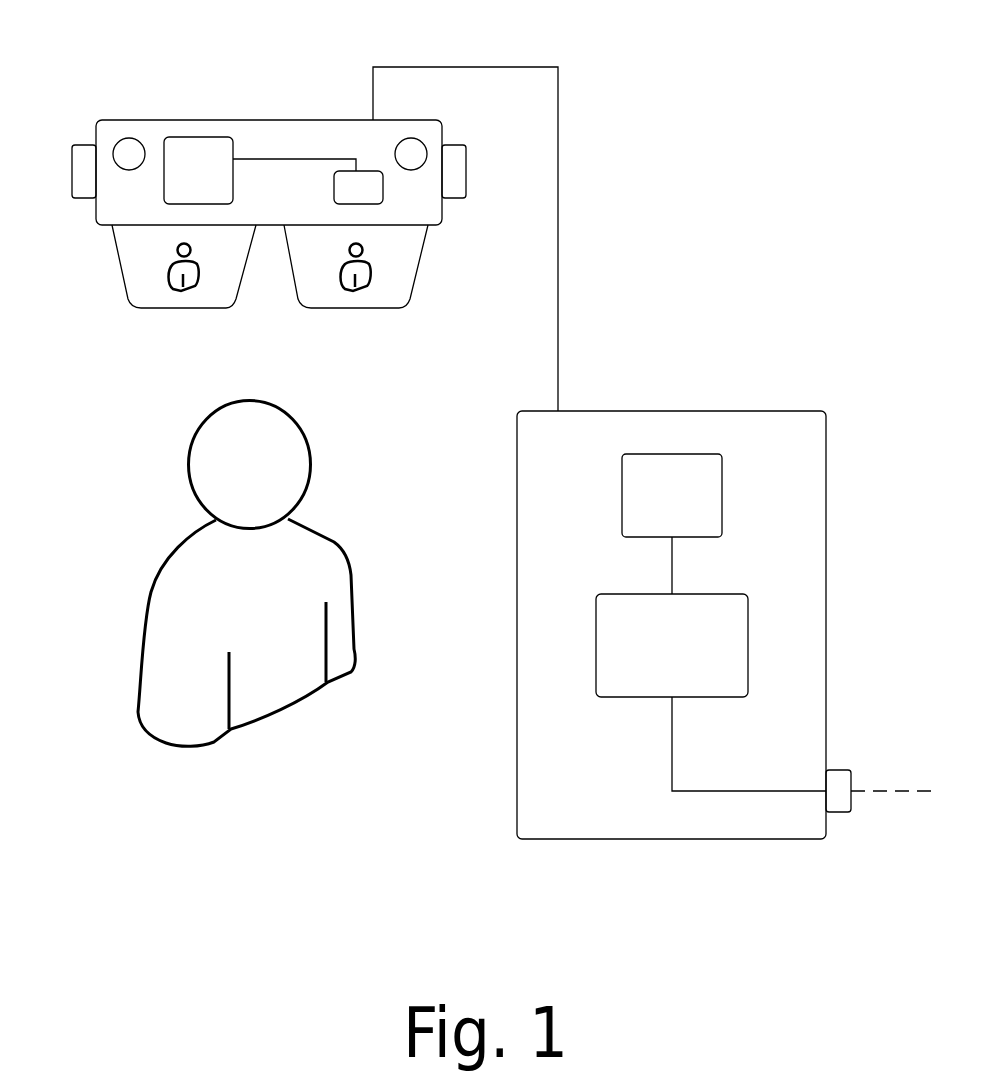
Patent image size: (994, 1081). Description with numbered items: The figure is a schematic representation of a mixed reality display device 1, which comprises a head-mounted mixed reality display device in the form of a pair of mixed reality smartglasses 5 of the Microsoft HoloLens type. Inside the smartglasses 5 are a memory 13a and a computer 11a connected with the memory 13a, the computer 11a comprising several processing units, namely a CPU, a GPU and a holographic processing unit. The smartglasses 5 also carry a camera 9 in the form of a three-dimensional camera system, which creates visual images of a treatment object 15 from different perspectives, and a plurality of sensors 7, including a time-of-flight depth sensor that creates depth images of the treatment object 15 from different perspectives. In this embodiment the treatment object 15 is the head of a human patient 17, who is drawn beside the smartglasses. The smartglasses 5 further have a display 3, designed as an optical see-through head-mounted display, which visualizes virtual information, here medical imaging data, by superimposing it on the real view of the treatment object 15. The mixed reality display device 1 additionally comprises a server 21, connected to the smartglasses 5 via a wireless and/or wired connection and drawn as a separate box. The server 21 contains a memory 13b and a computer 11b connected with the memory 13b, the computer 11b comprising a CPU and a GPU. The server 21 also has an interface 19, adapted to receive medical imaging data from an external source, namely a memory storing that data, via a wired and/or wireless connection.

The mixed reality display device 1 is at (858, 78).
The display 3 is at (92, 267).
The mixed reality smartglasses 5 is at (200, 118).
The sensors 7 is at (71, 170).
The camera 9 is at (128, 136).
The computer 11a is at (232, 147).
The memory 13a is at (333, 189).
The treatment object 15 is at (190, 470).
The human patient 17 is at (350, 576).
The interface 19 is at (838, 812).
The server 21 is at (825, 520).
The memory 13b is at (721, 493).
The computer 11b is at (611, 695).